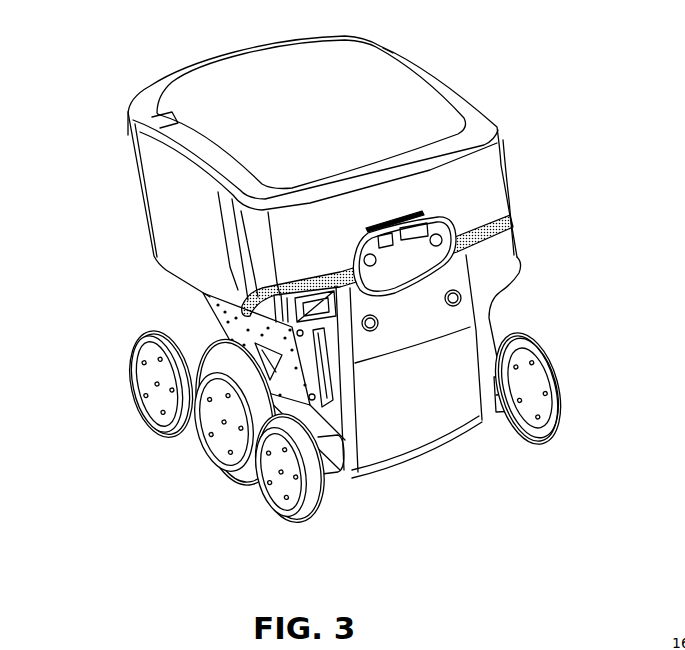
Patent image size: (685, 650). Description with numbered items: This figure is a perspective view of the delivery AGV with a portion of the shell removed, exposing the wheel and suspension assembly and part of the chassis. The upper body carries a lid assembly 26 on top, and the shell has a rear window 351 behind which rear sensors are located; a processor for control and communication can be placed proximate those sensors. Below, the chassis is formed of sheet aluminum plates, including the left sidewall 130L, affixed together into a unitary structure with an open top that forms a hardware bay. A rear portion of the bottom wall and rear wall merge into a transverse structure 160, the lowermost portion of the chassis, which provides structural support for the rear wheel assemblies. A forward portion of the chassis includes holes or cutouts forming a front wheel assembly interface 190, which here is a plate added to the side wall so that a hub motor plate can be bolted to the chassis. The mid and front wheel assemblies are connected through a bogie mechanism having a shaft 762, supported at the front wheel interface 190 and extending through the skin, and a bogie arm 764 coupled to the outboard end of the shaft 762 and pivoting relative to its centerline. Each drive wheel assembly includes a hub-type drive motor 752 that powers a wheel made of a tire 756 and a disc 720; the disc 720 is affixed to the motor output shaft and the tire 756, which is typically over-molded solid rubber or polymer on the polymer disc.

The lid assembly 26 is at (400, 112).
The left sidewall 130L is at (203, 293).
The front wheel assembly interface 190 is at (213, 310).
The shaft 762 is at (203, 365).
The bogie arm 764 is at (185, 355).
The disc 720 is at (424, 451).
The tire 756 is at (304, 510).
The hub-type drive motor 752 is at (327, 478).
The transverse structure 160 is at (358, 476).
The rear window 351 is at (432, 248).